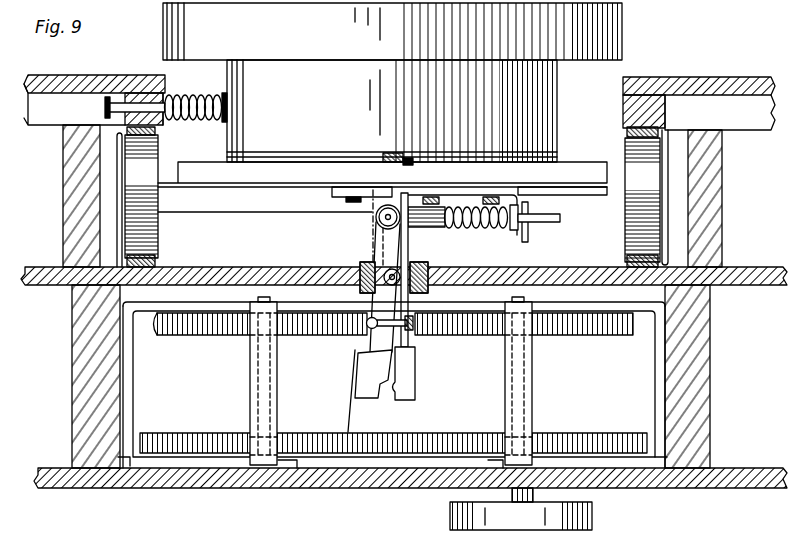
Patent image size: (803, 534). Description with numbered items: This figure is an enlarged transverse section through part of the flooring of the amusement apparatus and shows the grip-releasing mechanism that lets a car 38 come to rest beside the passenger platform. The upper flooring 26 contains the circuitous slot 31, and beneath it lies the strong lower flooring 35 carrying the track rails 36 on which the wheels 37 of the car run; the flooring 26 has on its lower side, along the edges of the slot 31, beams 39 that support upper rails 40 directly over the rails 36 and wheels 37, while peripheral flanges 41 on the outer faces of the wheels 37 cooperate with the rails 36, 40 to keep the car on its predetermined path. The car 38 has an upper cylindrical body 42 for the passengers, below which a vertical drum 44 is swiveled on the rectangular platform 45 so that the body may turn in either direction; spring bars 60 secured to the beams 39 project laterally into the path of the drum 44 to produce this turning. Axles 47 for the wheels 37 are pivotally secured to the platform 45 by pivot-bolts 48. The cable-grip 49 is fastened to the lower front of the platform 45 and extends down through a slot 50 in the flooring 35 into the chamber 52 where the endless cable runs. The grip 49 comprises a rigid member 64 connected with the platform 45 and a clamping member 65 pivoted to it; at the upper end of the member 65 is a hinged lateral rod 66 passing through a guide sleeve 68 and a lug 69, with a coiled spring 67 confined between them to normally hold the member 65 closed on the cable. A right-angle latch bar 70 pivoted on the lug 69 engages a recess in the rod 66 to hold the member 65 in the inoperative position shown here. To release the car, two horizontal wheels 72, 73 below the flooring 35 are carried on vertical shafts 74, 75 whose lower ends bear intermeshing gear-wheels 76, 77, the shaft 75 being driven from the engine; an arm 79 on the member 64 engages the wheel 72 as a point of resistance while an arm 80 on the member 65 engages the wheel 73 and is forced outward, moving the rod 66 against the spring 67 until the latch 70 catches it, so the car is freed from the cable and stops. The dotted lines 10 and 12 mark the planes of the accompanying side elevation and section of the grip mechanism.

The section line 10— 10 is at (371, 295).
The section line 12— 12 is at (491, 303).
The flooring 26 is at (399, 87).
The slot 31 is at (356, 97).
The lower flooring 35 is at (275, 258).
The track rails 36 is at (158, 262).
The wheels 37 is at (392, 198).
The car 38 is at (614, 31).
The beams 39 is at (70, 150).
The upper rails 40 is at (155, 133).
The peripheral flanges 41 is at (118, 195).
The cylindrical body portion 42 is at (392, 31).
The vertical drum 44 is at (392, 111).
The platform 45 is at (270, 170).
The axles 47 is at (318, 212).
The pivot-bolts 48 is at (385, 155).
The cable-grip 49 is at (424, 282).
The slot 50 is at (419, 252).
The chamber 52 is at (392, 387).
The spring bars 60 is at (255, 150).
The rigid member 64 is at (412, 396).
The clamping-member 65 is at (365, 372).
The rod 66 is at (556, 222).
The coiled spring 67 is at (501, 214).
The guide sleeve 68 is at (437, 218).
The lug 69 is at (556, 194).
The latch bar 70 is at (530, 236).
The horizontal wheel 72 is at (230, 328).
The horizontal wheel 73 is at (590, 330).
The vertical shaft 74 is at (258, 404).
The vertical shaft 75 is at (536, 402).
The gear-wheel 76 is at (196, 433).
The gear-wheel 77 is at (630, 436).
The arm 79 is at (368, 318).
The arm 80 is at (420, 322).